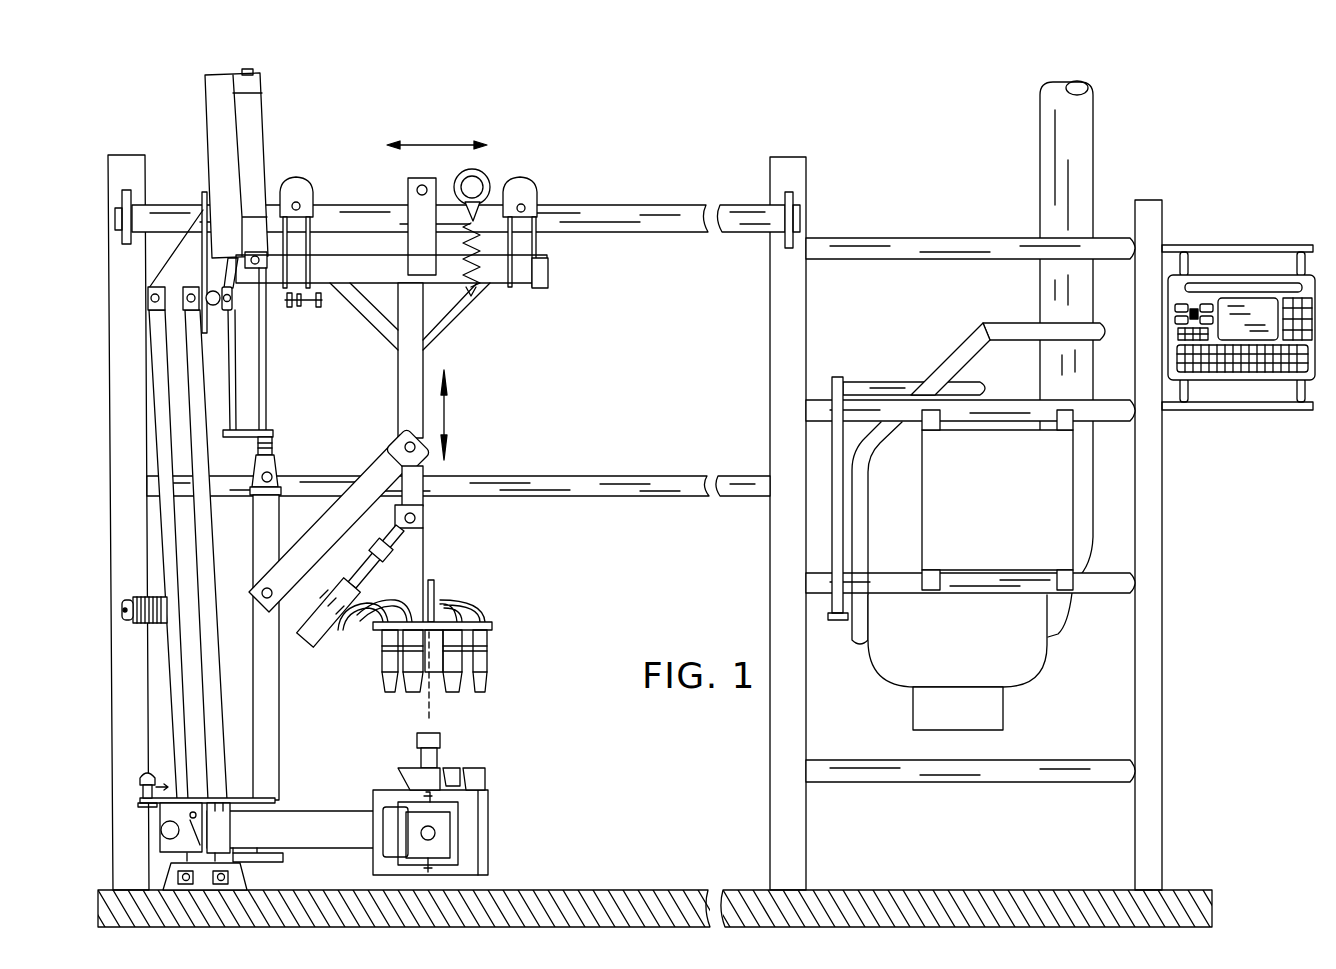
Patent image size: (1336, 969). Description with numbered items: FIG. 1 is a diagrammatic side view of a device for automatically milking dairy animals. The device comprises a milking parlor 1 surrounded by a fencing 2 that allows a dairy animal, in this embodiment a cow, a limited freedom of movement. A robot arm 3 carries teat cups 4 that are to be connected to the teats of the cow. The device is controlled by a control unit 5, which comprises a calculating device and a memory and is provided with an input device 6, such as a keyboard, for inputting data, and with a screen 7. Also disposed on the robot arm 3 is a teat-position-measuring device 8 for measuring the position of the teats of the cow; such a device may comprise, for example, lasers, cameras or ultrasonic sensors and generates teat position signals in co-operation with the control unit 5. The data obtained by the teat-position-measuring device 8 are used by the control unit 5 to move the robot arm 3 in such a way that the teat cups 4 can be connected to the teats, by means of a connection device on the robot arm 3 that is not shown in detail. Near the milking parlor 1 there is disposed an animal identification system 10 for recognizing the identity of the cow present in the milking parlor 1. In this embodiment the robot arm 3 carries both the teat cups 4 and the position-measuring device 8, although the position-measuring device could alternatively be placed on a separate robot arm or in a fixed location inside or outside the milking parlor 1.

The milking parlor 1 is at (718, 812).
The fencing 2 is at (627, 204).
The robot arm 3 is at (362, 835).
The teat cups 4 is at (475, 775).
The control unit 5 is at (692, 488).
The input device 6 is at (1243, 355).
The screen 7 is at (1265, 315).
The teat-position-measuring device 8 is at (430, 742).
The animal identification system 10 is at (990, 712).